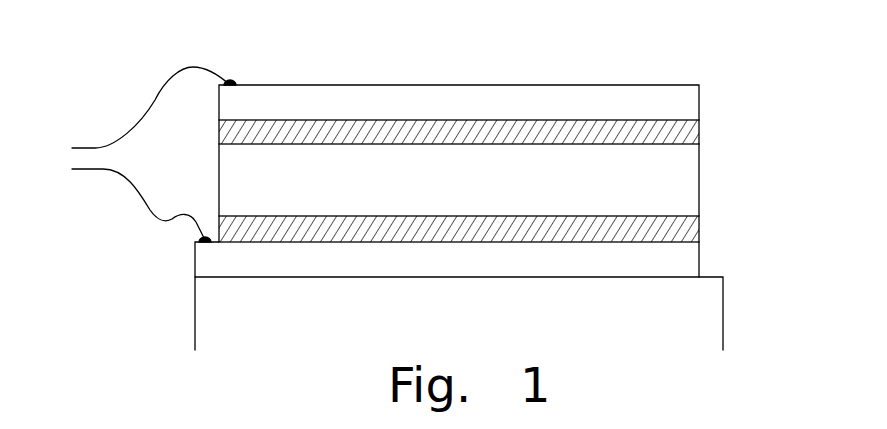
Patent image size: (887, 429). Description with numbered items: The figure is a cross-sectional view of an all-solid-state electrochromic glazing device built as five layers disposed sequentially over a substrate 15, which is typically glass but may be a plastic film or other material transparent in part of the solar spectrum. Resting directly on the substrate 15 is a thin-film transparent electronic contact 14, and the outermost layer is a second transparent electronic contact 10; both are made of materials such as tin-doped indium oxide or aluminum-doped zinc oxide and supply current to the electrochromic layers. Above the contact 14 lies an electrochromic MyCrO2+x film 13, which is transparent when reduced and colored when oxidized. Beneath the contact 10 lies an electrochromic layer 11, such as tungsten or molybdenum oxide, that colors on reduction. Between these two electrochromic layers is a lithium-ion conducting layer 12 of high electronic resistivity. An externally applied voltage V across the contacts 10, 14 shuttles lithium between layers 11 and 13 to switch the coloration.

The externally applied voltage V is at (134, 154).
The transparent electronic contact 10 is at (693, 96).
The electrochromic layer 11 is at (687, 126).
The Li+ ion-conducting layer 12 is at (674, 177).
The electrochromic MyCrO2+x film 13 is at (690, 225).
The transparent electronic contact 14 is at (688, 256).
The substrate 15 is at (459, 313).